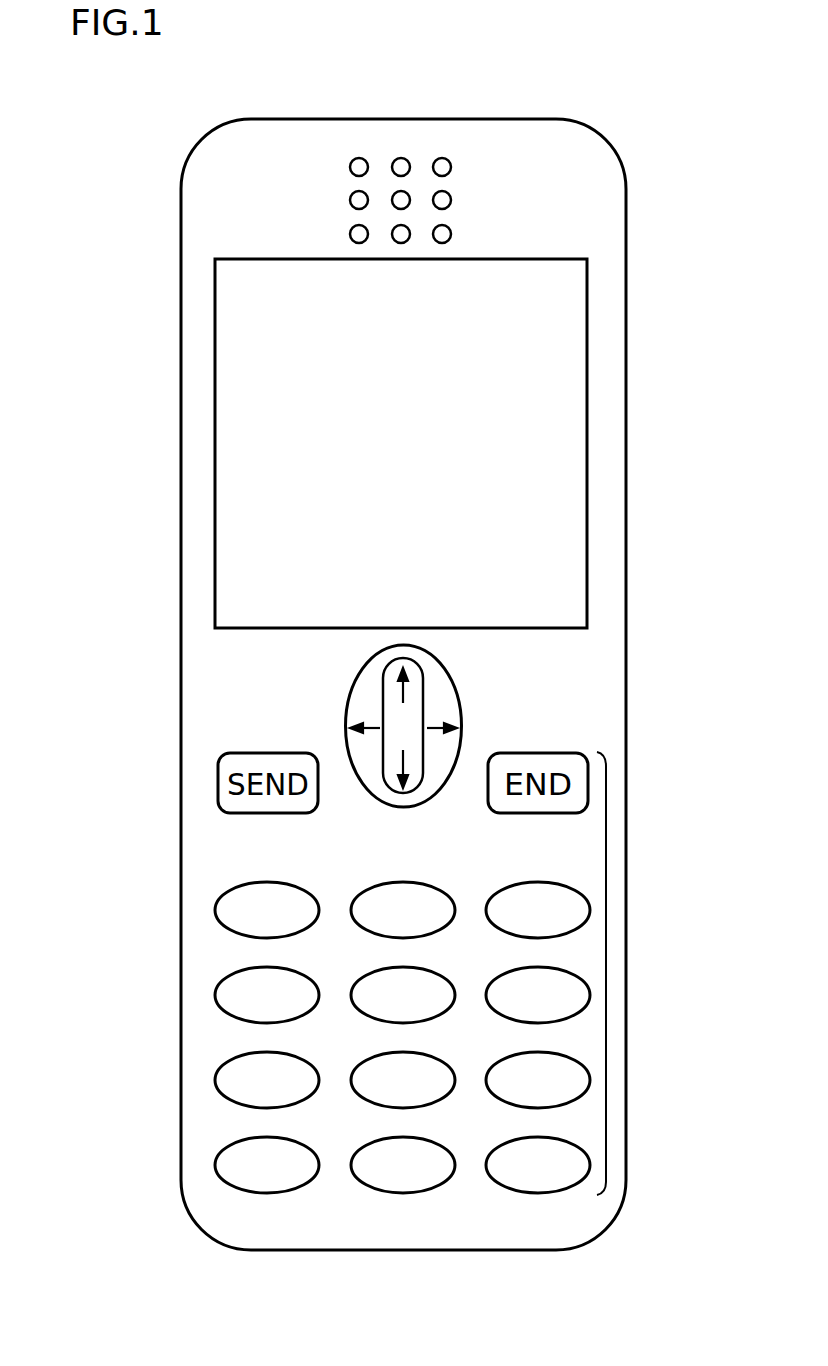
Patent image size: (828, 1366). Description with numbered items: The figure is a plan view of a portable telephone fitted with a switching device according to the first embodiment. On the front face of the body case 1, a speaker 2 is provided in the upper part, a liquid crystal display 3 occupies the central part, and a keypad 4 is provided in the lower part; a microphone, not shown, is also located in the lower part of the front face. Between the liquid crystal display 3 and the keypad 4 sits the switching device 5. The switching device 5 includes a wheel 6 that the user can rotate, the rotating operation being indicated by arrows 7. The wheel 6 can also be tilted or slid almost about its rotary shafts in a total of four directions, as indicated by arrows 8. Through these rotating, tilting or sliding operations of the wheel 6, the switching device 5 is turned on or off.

The body case 1 is at (467, 119).
The speaker 2 is at (445, 200).
The liquid crystal display 3 is at (515, 388).
The keypad 4 is at (606, 971).
The switching device 5 is at (437, 688).
The wheel 6 is at (410, 720).
The arrows 7 is at (401, 697).
The arrows 8 is at (376, 723).